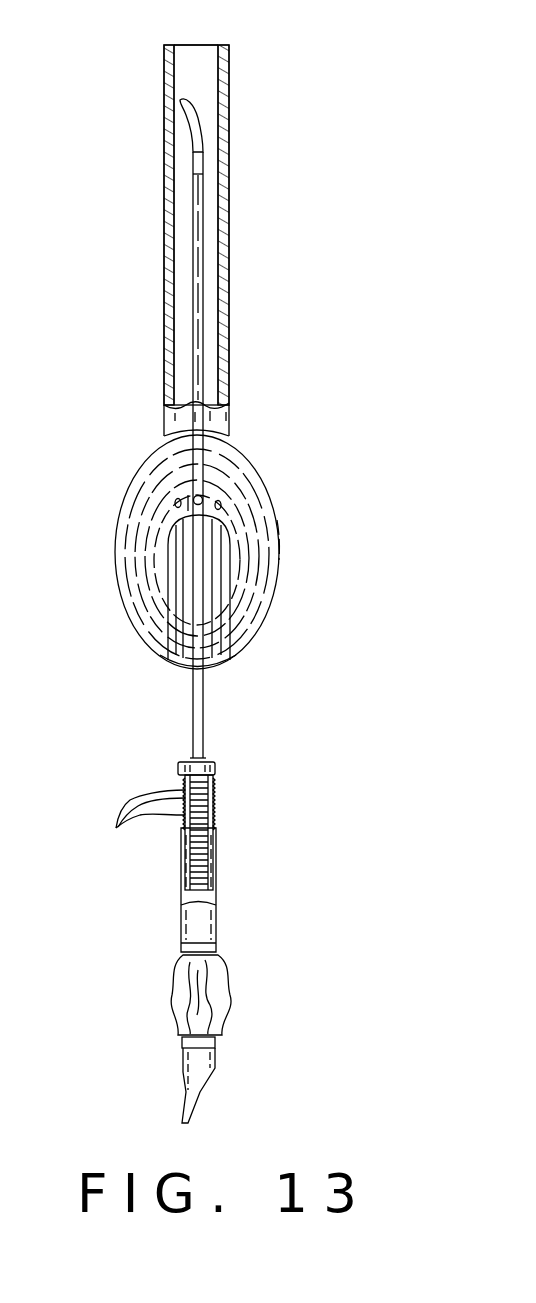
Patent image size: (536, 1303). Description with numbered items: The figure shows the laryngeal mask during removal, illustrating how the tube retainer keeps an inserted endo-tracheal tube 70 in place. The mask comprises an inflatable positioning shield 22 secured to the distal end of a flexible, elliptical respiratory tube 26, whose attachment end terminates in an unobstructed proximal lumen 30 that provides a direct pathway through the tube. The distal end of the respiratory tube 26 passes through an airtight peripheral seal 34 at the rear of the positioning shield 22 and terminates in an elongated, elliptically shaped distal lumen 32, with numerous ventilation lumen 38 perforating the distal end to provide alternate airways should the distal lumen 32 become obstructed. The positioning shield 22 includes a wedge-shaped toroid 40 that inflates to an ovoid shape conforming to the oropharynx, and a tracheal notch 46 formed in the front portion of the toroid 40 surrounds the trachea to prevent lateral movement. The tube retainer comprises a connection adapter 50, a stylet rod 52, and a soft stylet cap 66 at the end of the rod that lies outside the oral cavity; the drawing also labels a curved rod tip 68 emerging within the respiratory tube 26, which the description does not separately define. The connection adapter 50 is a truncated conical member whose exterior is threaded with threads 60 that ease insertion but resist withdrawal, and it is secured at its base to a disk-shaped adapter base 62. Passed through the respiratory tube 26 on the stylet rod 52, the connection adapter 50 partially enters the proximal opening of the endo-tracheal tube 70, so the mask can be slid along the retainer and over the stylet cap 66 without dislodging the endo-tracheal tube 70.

The proximal lumen 30 is at (198, 55).
The respiratory tube 26 is at (168, 325).
The curved distal tip of stylet 68 is at (186, 130).
The stylet rod 52 is at (190, 262).
The airtight peripheral seal 34 is at (232, 440).
The ventilation lumen 38 is at (222, 505).
The distal lumen 32 is at (185, 530).
The inflatable positioning shield 22 is at (282, 570).
The wedge-shaped toroid 40 is at (122, 605).
The tracheal notch 46 is at (232, 660).
The stylet cap 66 is at (205, 757).
The adapter base 62 is at (215, 768).
The connection adapter 50 is at (212, 817).
The threads 60 is at (140, 826).
The endo-tracheal tube 70 is at (216, 903).